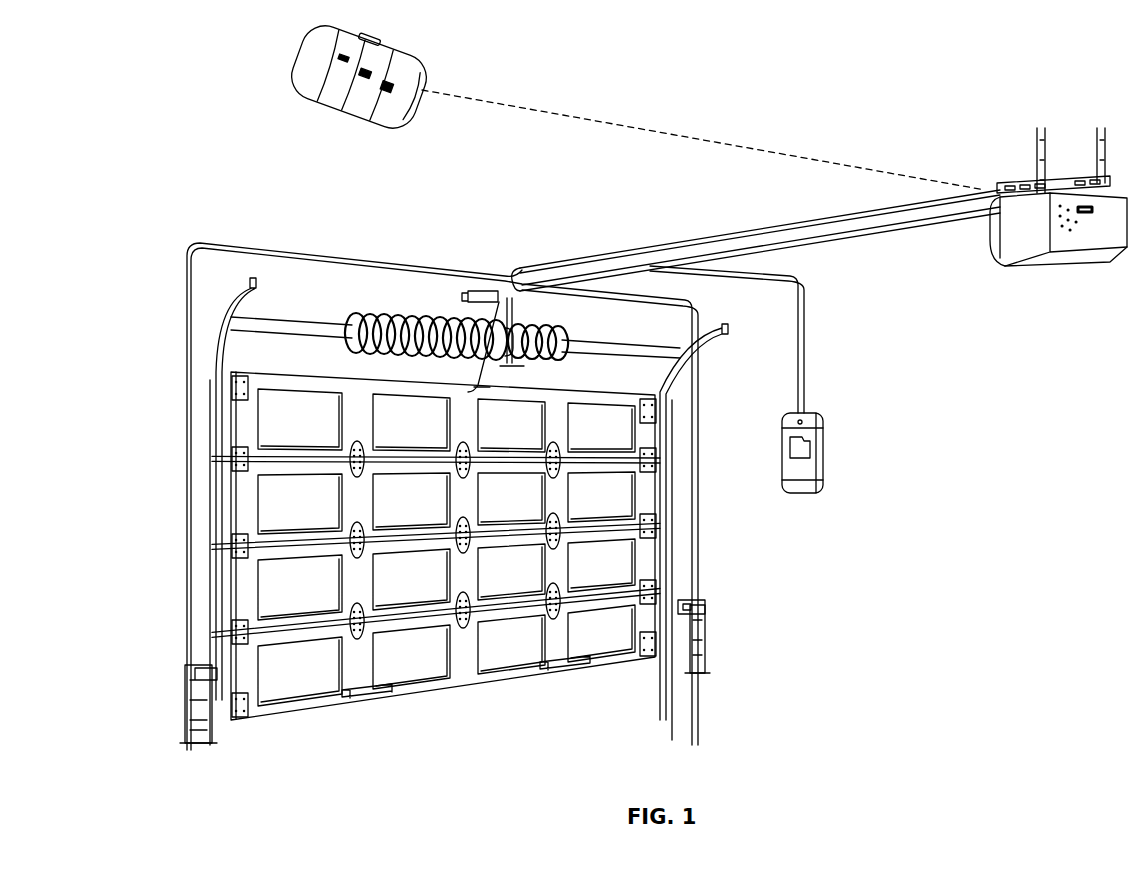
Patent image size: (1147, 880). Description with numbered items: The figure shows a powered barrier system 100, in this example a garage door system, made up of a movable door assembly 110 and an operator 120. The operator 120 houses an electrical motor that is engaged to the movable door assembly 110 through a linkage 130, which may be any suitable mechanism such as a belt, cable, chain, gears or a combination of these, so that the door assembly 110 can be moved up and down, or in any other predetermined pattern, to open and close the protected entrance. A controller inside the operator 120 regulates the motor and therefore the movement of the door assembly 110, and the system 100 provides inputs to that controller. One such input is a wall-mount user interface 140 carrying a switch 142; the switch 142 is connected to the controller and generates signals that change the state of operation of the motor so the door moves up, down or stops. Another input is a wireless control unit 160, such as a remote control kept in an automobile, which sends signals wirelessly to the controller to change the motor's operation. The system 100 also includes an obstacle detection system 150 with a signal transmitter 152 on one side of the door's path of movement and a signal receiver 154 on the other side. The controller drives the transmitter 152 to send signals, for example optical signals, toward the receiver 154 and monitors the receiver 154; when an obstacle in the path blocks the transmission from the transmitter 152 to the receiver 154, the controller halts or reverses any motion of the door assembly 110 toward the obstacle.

The garage door system 100 is at (957, 52).
The movable door assembly 110 is at (470, 680).
The operator 120 is at (1070, 257).
The linkage 130 is at (870, 237).
The wall-mount user interface 140 is at (827, 472).
The switch 142 is at (810, 447).
The obstacle detection system 150 is at (553, 780).
The signal transmitter 152 is at (207, 673).
The signal receiver 154 is at (687, 613).
The wireless control unit 160 is at (362, 122).